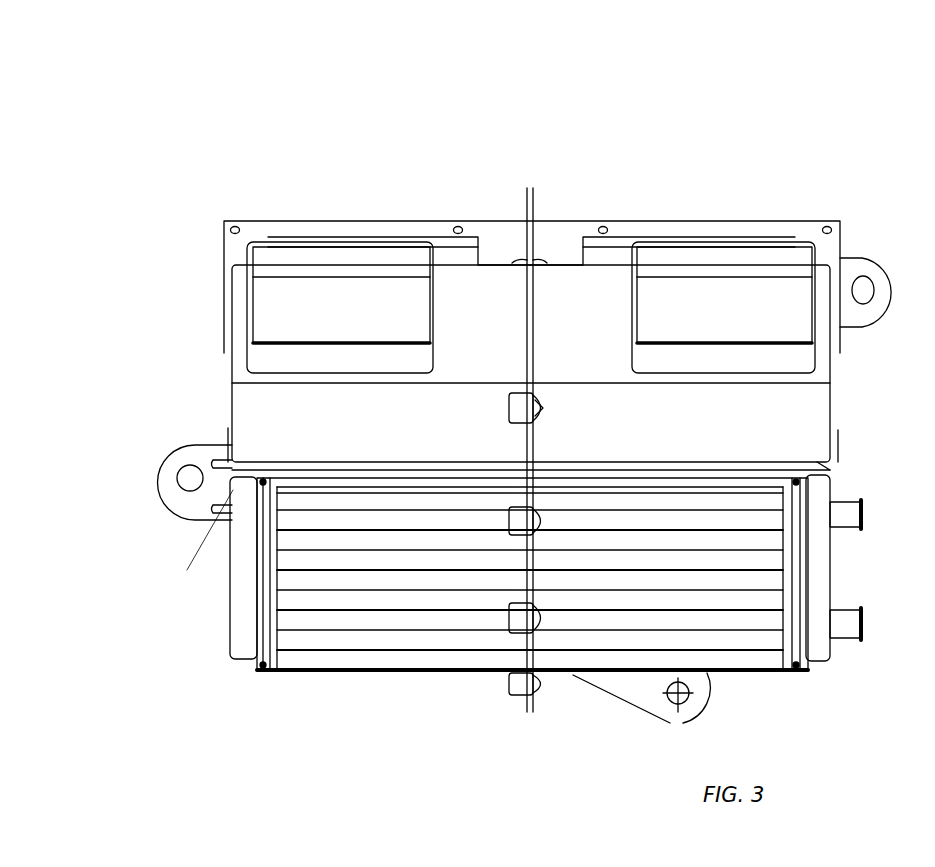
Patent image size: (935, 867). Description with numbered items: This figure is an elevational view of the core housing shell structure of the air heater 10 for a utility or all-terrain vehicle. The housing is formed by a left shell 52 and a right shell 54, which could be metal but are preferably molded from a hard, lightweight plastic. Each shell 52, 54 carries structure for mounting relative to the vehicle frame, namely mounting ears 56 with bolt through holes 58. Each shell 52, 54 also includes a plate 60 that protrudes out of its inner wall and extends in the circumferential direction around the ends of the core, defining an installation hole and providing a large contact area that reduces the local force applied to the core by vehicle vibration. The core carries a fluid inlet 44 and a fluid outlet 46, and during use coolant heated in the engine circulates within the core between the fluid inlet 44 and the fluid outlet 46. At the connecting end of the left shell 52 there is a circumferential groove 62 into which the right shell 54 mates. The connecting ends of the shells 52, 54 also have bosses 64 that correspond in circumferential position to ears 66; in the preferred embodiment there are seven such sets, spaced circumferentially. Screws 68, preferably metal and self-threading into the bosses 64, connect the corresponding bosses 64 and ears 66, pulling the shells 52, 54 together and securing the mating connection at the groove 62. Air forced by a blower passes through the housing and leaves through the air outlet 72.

The air heater 10 is at (345, 85).
The fluid inlet 44 is at (845, 510).
The fluid outlet 46 is at (845, 617).
The left shell 52 is at (257, 412).
The right shell 54 is at (808, 412).
The mounting ears 56 is at (853, 265).
The bolt through holes 58 is at (865, 290).
The plate 60 is at (242, 600).
The circumferential groove 62 is at (535, 290).
The bosses 64 is at (508, 403).
The ears 66 is at (540, 402).
The screws 68 is at (545, 420).
The air outlet 72 is at (260, 288).